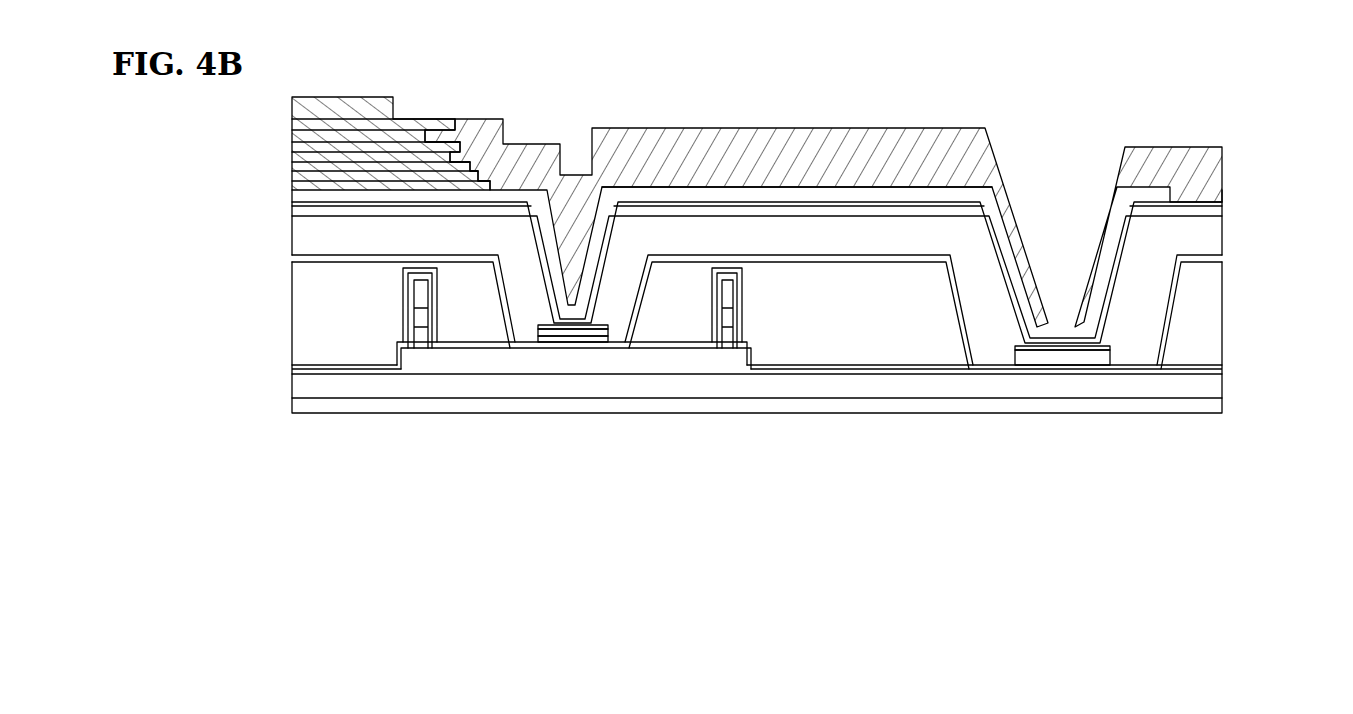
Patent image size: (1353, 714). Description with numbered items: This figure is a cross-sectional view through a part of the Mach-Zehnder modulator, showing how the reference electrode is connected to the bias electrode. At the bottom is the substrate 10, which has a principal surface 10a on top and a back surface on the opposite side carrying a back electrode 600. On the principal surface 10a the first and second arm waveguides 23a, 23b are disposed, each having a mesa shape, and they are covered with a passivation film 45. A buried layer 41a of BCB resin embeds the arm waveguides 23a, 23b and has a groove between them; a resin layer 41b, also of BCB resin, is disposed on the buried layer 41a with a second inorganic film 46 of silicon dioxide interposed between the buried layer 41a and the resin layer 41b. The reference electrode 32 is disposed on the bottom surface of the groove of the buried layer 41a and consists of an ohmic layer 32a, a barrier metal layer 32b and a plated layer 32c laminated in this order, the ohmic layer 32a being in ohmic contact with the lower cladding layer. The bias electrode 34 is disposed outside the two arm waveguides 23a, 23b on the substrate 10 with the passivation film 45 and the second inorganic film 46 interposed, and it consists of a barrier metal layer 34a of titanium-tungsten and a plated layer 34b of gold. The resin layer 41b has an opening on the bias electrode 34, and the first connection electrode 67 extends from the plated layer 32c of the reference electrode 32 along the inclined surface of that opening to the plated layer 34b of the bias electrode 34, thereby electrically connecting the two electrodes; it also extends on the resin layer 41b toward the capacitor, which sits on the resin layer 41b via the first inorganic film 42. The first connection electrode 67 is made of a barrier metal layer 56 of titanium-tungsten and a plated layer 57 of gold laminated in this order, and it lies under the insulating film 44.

The back electrode 600 is at (1212, 412).
The substrate 10 is at (1210, 384).
The principal surface 10a is at (1172, 376).
The buried layer 41a is at (757, 356).
The resin layer 41b is at (929, 230).
The passivation film 45 is at (908, 343).
The second inorganic film 46 is at (962, 338).
The first arm waveguide 23a is at (752, 301).
The second arm waveguide 23b is at (395, 301).
The reference electrode 32 is at (576, 410).
The ohmic layer 32a is at (536, 345).
The barrier metal layer 32b is at (568, 342).
The plated layer 32c is at (612, 333).
The bias electrode 34 is at (1062, 420).
The barrier metal layer 34a is at (1040, 354).
The plated layer 34b is at (1086, 356).
The first inorganic film 42 is at (857, 207).
The insulating film 44 is at (790, 130).
The barrier metal layer 56 is at (619, 203).
The plated layer 57 is at (648, 193).
The first connection electrode 67 is at (757, 187).